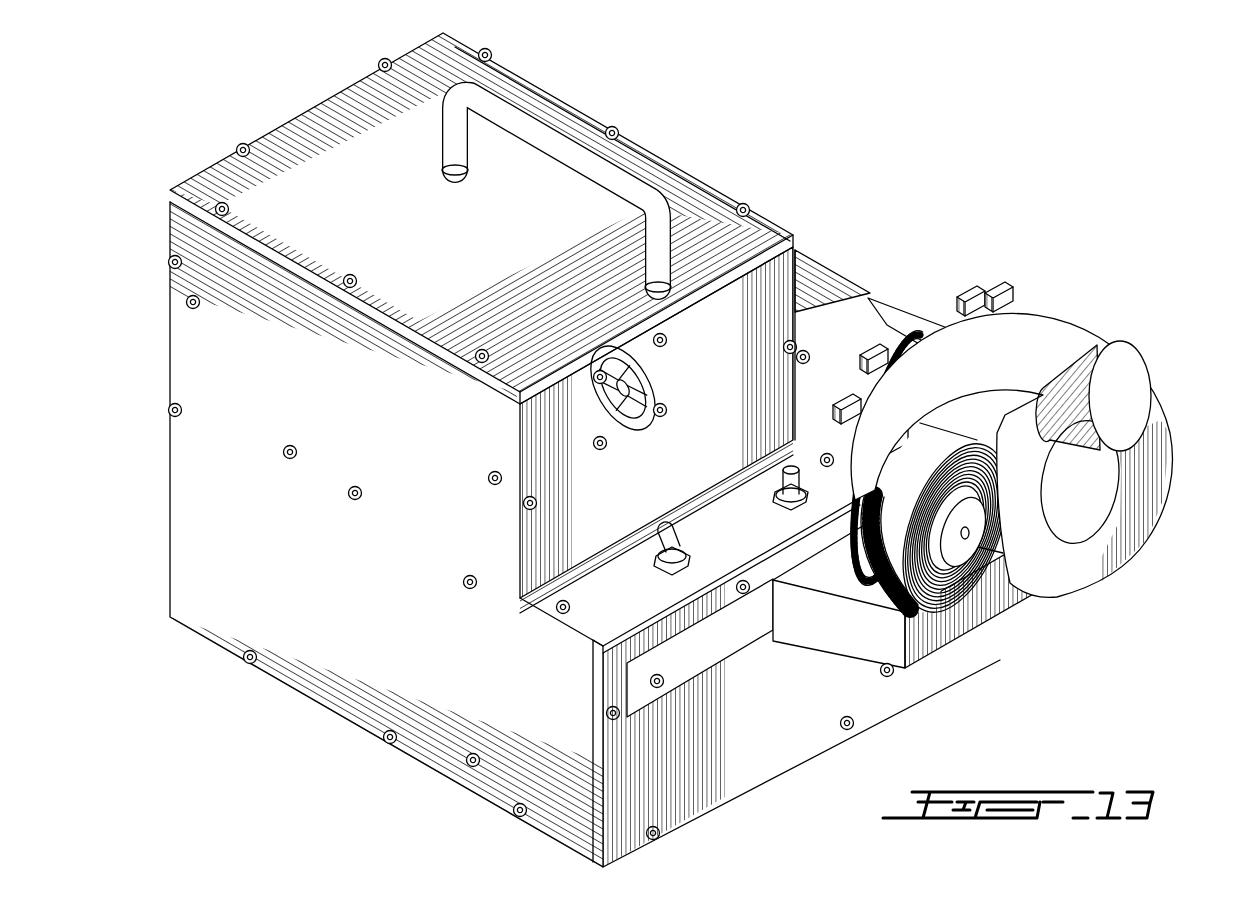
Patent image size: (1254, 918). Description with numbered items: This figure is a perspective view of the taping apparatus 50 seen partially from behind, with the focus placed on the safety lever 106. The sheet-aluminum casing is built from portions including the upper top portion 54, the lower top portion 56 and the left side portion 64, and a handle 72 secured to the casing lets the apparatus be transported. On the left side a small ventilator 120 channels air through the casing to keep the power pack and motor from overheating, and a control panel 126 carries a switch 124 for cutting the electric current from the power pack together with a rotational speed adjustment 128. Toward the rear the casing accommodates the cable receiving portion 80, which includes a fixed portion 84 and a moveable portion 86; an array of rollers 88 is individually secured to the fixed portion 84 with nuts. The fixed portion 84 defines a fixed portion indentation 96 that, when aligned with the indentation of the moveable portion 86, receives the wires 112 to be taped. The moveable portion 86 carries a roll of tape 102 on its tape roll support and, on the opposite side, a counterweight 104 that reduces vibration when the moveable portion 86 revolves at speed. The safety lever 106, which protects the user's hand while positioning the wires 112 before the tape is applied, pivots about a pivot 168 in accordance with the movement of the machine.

The taping apparatus 50 is at (158, 144).
The upper top portion 54 is at (458, 253).
The lower top portion 56 is at (838, 360).
The left side portion 64 is at (713, 445).
The handle 72 is at (552, 130).
The cable receiving portion 80 is at (994, 405).
The fixed portion 84 is at (985, 275).
The moveable portion 86 is at (1052, 340).
The rollers 88 is at (908, 372).
The fixed portion indentation 96 is at (948, 315).
The roll of tape 102 is at (893, 530).
The counterweight 104 is at (1100, 352).
The safety lever 106 is at (855, 640).
The wires 112 is at (968, 537).
The ventilator 120 is at (600, 400).
The switch 124 is at (688, 552).
The control panel 126 is at (778, 537).
The rotational speed adjustment 128 is at (800, 510).
The pivot 168 is at (660, 686).